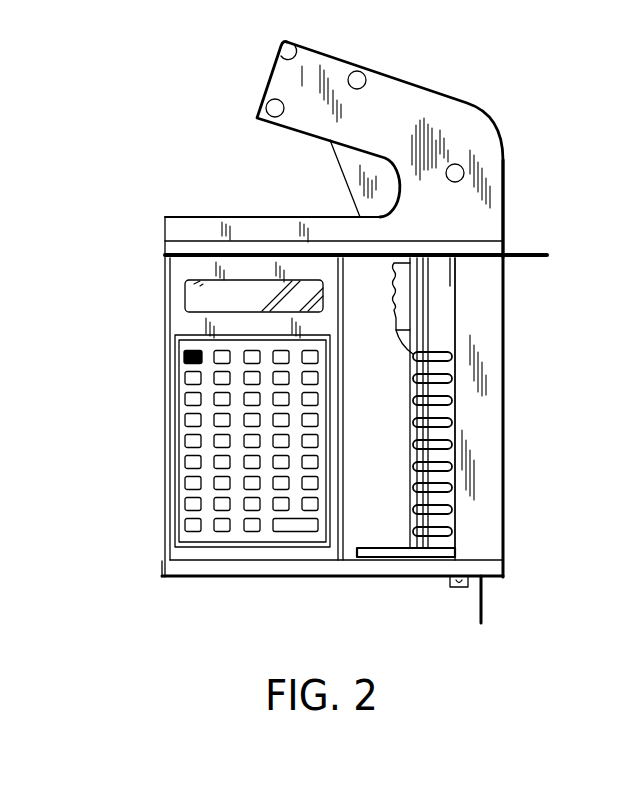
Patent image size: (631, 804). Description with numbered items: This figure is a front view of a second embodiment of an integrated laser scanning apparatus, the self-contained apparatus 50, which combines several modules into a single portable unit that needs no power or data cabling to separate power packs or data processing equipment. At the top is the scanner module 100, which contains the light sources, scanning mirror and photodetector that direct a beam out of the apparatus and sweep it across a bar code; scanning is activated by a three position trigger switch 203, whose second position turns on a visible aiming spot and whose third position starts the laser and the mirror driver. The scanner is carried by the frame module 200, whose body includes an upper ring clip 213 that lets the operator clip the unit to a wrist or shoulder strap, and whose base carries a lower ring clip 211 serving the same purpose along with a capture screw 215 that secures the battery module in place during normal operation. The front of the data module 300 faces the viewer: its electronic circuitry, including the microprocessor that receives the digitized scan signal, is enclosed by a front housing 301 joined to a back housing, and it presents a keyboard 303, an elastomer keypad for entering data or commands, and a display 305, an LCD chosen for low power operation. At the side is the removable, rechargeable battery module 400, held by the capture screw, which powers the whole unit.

The self-contained apparatus 50 is at (118, 131).
The scanner module 100 is at (418, 96).
The frame module 200 is at (430, 537).
The three position trigger switch 203 is at (394, 312).
The lower ring clip 211 is at (486, 599).
The upper ring clip 213 is at (547, 258).
The capture screw 215 is at (454, 588).
The data module 300 is at (168, 513).
The front housing 301 is at (175, 320).
The keyboard 303 is at (187, 422).
The display 305 is at (185, 290).
The removable, rechargeable battery module 400 is at (488, 418).